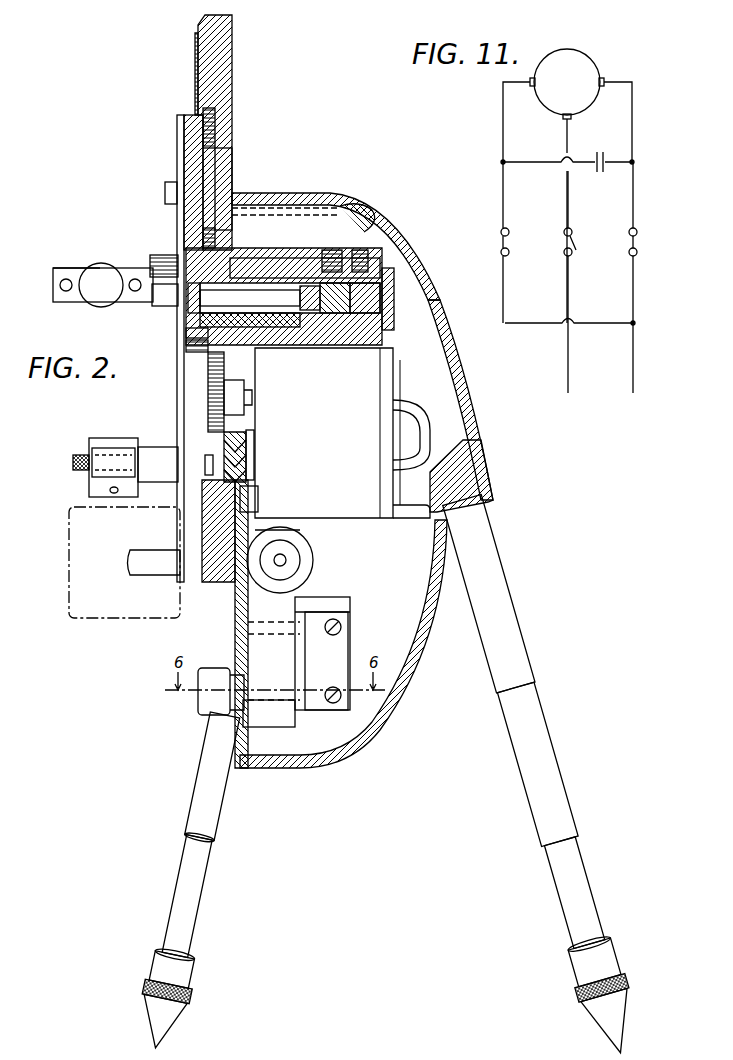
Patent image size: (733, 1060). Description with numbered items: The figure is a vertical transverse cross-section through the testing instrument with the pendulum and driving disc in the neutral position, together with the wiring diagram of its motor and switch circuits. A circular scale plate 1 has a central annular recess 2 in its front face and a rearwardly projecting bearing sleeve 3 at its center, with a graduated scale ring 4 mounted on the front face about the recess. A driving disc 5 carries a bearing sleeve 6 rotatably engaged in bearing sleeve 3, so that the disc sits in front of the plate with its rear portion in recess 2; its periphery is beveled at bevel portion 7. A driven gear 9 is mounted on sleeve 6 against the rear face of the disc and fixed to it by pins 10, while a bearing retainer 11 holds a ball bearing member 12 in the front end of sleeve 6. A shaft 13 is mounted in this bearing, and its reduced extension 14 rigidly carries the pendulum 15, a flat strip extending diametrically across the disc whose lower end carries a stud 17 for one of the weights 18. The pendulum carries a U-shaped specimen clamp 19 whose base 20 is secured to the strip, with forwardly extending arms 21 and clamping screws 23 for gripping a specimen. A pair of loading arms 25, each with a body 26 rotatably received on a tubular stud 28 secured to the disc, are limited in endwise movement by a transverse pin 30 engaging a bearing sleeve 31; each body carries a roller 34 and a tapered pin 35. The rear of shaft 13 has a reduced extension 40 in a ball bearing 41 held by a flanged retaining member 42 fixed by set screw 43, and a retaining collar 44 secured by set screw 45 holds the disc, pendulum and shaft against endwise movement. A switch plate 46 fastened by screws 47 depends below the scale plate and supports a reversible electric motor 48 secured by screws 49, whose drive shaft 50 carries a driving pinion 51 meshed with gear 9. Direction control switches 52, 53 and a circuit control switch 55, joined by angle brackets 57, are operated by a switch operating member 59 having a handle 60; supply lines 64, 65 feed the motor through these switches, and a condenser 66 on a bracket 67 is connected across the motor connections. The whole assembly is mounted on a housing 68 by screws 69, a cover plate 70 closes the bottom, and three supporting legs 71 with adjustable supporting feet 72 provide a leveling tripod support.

In FIG. 2, the scale plate 1 is at (232, 70).
In FIG. 2, the central annular recess 2 is at (212, 140).
In FIG. 2, the bearing sleeve 3 is at (300, 258).
In FIG. 2, the scale ring 4 is at (197, 52).
In FIG. 2, the driving disc 5 is at (222, 174).
In FIG. 2, the bearing sleeve 6 is at (255, 270).
In FIG. 2, the bevel portion 7 is at (190, 116).
In FIG. 2, the driven gear 9 is at (205, 232).
In FIG. 2, the pins 10 is at (192, 348).
In FIG. 2, the bearing retainer 11 is at (190, 332).
In FIG. 2, the ball bearing member 12 is at (244, 298).
In FIG. 2, the shaft 13 is at (270, 328).
In FIG. 2, the reduced extension 14 is at (152, 302).
In FIG. 2, the pendulum 15 is at (180, 394).
In FIG. 2, the stud 17 is at (162, 556).
In FIG. 2, the weights 18 is at (134, 624).
In FIG. 2, the specimen clamp 19 is at (67, 305).
In FIG. 2, the base 20 is at (160, 258).
In FIG. 2, the arms 21 is at (73, 268).
In FIG. 2, the clamping screws 23 is at (102, 276).
In FIG. 2, the loading arms 25 is at (128, 434).
In FIG. 2, the body 26 is at (92, 480).
In FIG. 2, the tubular stud 28 is at (160, 447).
In FIG. 2, the pin 30 is at (246, 442).
In FIG. 2, the bearing sleeve 31 is at (205, 464).
In FIG. 2, the roller 34 is at (97, 455).
In FIG. 2, the pin 35 is at (114, 494).
In FIG. 2, the reduced extension 40 is at (333, 313).
In FIG. 2, the ball bearing 41 is at (308, 310).
In FIG. 2, the retaining member 42 is at (390, 280).
In FIG. 2, the set screw 43 is at (332, 258).
In FIG. 2, the retaining collar 44 is at (362, 313).
In FIG. 2, the set screw 45 is at (362, 258).
In FIG. 2, the switch plate 46 is at (248, 658).
In FIG. 2, the screws 47 is at (250, 472).
In FIG. 2, the reversible electric motor 48 is at (400, 362).
In FIG. 11, the reversible electric motor 48 is at (572, 50).
In FIG. 2, the screws 49 is at (255, 496).
In FIG. 2, the drive shaft 50 is at (250, 398).
In FIG. 2, the driving pinion 51 is at (226, 425).
In FIG. 2, the direction control switch 52 is at (262, 727).
In FIG. 11, the direction control switch 52 is at (500, 244).
In FIG. 11, the direction control switch 53 is at (640, 241).
In FIG. 2, the circuit control switch 55 is at (327, 600).
In FIG. 11, the circuit control switch 55 is at (578, 240).
In FIG. 2, the angle brackets 57 is at (335, 650).
In FIG. 2, the switch operating member 59 is at (214, 668).
In FIG. 2, the handle 60 is at (212, 712).
In FIG. 11, the current supply line 64 is at (568, 372).
In FIG. 11, the current supply line 65 is at (633, 380).
In FIG. 2, the condenser 66 is at (313, 560).
In FIG. 11, the condenser 66 is at (604, 156).
In FIG. 2, the bracket 67 is at (295, 528).
In FIG. 2, the housing 68 is at (420, 250).
In FIG. 2, the screws 69 is at (290, 194).
In FIG. 2, the cover plate 70 is at (235, 600).
In FIG. 2, the supporting legs 71 is at (213, 812).
In FIG. 2, the supporting feet 72 is at (190, 975).